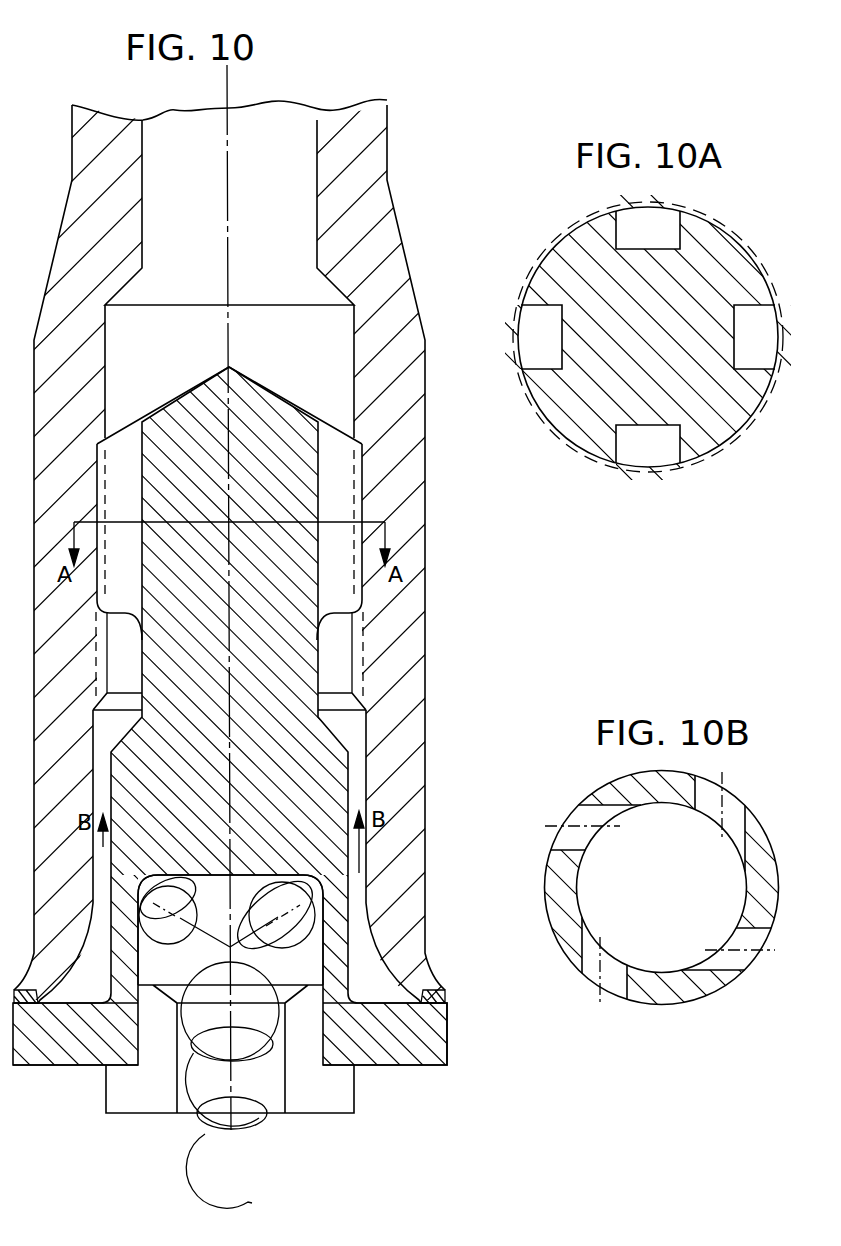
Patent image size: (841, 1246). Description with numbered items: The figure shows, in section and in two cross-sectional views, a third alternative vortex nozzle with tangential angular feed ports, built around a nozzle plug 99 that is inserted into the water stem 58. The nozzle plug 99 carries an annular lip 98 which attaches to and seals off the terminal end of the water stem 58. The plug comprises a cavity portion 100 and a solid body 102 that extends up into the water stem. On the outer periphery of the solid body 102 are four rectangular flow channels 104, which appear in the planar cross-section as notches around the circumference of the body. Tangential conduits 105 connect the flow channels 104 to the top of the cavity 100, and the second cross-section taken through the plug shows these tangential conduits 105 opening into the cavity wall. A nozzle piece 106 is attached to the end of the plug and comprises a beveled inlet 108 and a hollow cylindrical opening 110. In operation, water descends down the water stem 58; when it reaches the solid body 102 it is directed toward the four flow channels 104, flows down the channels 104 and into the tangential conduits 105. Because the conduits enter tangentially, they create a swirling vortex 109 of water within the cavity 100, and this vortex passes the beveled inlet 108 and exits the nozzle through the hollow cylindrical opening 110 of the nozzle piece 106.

In FIG. 10, the housing 58 is at (440, 968).
In FIG. 10, the annular lip 98 is at (447, 1043).
In FIG. 10, the nozzle plug 99 is at (350, 790).
In FIG. 10, the cavity portion 100 is at (200, 981).
In FIG. 10, the solid body 102 is at (313, 745).
In FIG. 10A, the flow channels 104 is at (663, 227).
In FIG. 10, the tangential conduits 105 is at (286, 946).
In FIG. 10B, the tangential conduits 105 is at (733, 810).
In FIG. 10, the nozzle piece 106 is at (180, 1024).
In FIG. 10, the beveled inlet 108 is at (287, 995).
In FIG. 10, the swirling vortex 109 is at (188, 1178).
In FIG. 10, the hollow cylindrical opening 110 is at (280, 1067).